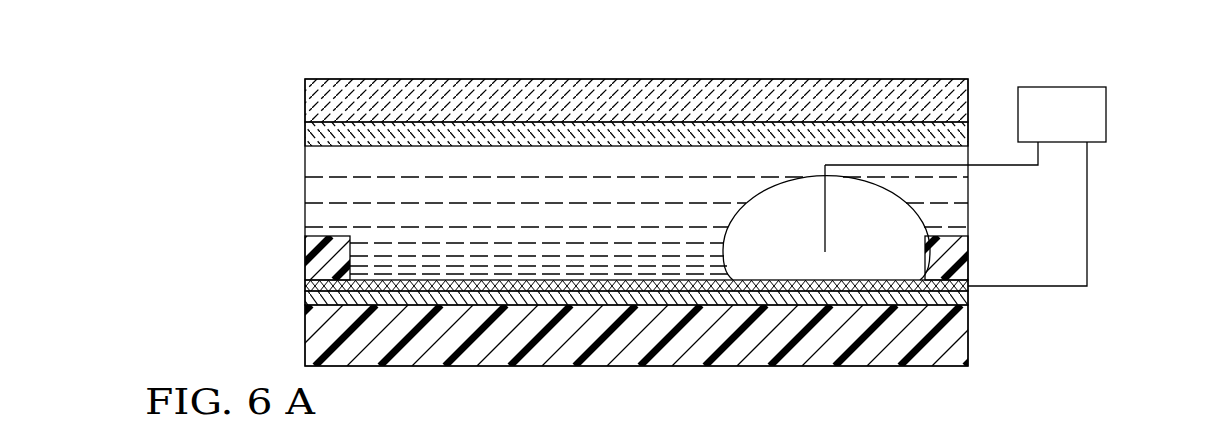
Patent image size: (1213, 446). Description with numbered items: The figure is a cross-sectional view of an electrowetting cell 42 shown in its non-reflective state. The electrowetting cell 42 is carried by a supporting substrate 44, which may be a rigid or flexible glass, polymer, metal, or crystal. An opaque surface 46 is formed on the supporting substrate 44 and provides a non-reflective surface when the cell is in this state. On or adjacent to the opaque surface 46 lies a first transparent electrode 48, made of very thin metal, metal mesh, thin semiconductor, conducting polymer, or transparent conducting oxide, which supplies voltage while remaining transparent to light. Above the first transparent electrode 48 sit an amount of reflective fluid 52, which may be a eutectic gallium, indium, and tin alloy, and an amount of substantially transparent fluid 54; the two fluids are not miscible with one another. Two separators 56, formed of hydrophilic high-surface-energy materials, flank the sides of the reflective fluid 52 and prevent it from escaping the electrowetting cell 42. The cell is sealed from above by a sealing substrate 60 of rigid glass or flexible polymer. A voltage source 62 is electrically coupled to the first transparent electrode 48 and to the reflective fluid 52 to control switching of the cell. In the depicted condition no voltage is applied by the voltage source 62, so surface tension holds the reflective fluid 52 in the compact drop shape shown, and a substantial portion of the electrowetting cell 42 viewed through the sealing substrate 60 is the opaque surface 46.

The electrowetting cell 42 is at (295, 56).
The supporting substrate 44 is at (305, 340).
The opaque surface 46 is at (305, 302).
The first transparent electrode 48 is at (305, 285).
The reflective fluid 52 is at (897, 225).
The transparent fluid 54 is at (387, 212).
The separators 56 is at (305, 258).
The sealing substrate 60 is at (860, 85).
The voltage source 62 is at (1062, 87).